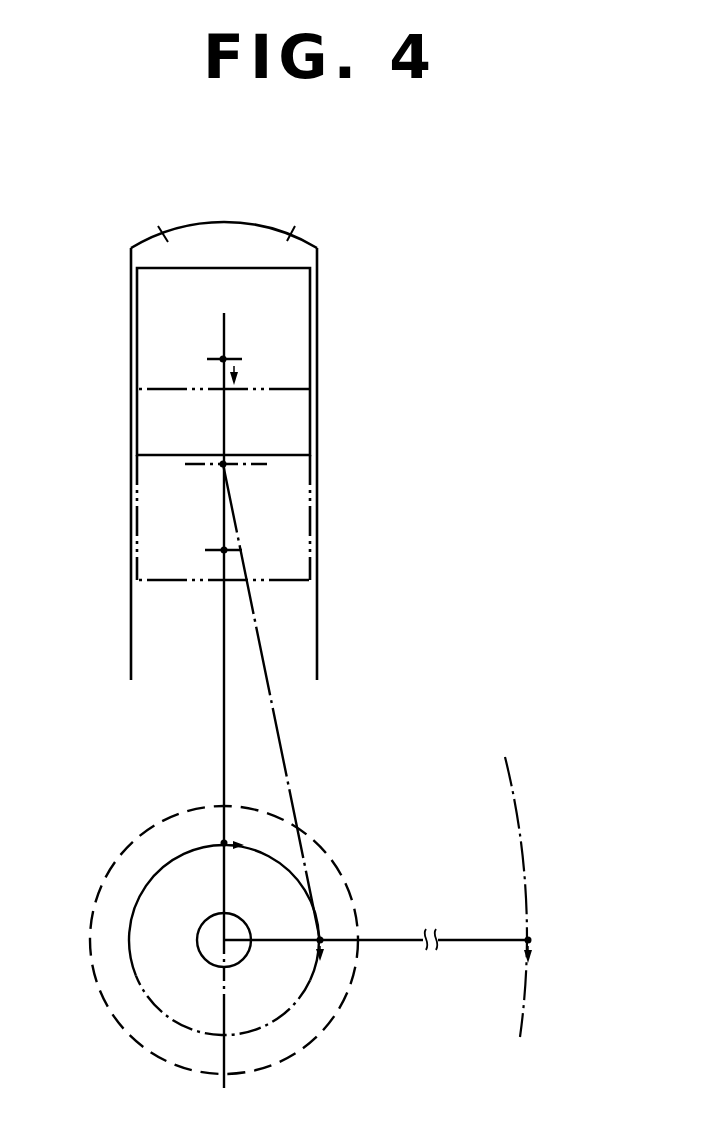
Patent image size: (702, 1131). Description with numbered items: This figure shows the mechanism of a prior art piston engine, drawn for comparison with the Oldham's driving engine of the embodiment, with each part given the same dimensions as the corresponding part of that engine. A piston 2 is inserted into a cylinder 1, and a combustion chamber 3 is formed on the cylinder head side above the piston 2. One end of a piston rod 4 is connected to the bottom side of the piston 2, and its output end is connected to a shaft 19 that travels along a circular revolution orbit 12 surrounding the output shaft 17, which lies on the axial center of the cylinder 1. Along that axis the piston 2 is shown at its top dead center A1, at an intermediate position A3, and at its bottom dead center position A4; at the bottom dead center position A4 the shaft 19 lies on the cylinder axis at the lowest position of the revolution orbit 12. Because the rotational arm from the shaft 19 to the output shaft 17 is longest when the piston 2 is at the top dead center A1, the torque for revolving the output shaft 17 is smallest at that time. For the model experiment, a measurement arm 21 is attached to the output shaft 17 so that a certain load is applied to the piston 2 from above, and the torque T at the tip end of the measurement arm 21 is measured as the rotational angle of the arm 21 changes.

The cylinder 1 is at (317, 608).
The piston 2 is at (150, 268).
The combustion chamber 3 is at (268, 238).
The piston rod 4 is at (225, 412).
The revolution orbit 12 is at (140, 900).
The output shaft 17 is at (211, 962).
The shaft 19 is at (224, 843).
The measurement arm 21 is at (388, 940).
The top dead center A1 is at (223, 359).
The piston position A3 is at (223, 465).
The bottom dead center position A4 is at (224, 551).
The torque T is at (531, 897).